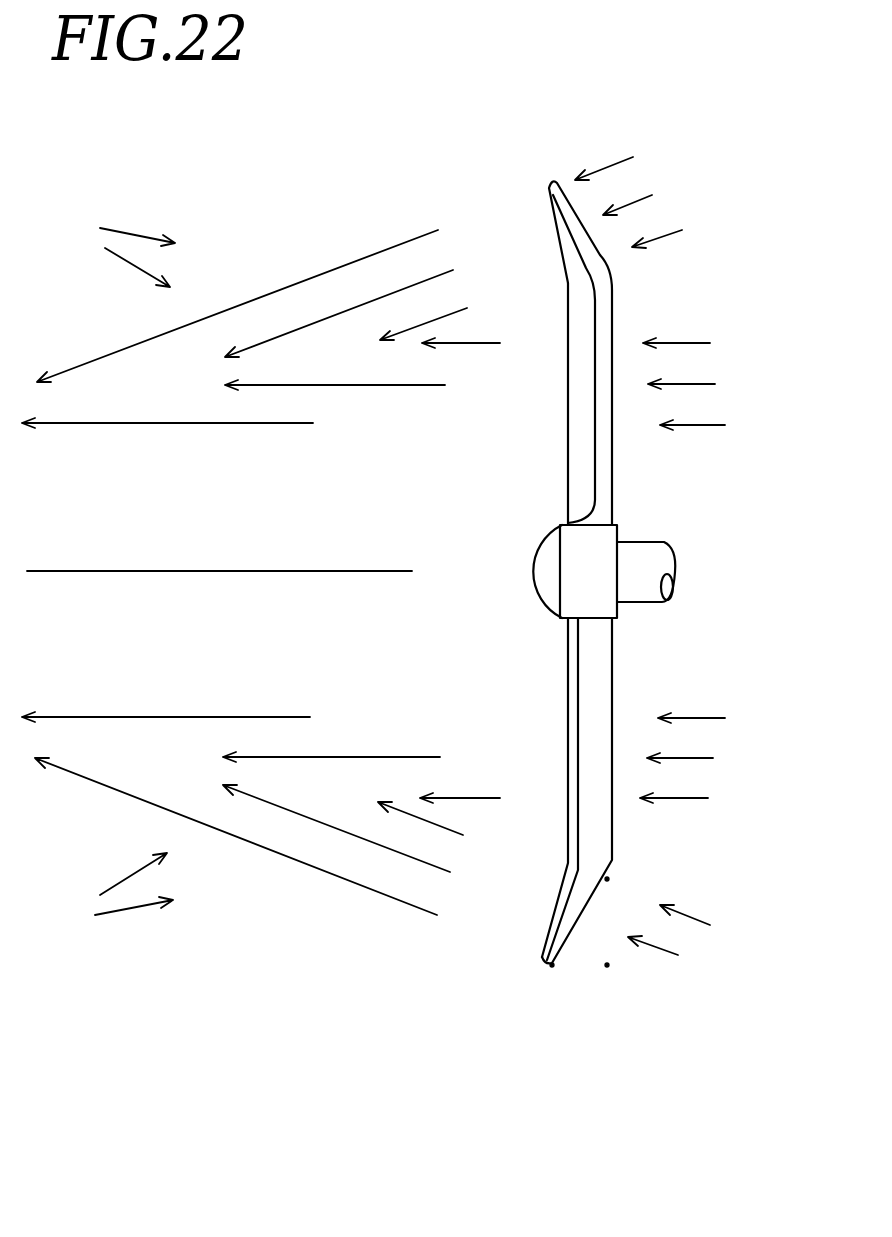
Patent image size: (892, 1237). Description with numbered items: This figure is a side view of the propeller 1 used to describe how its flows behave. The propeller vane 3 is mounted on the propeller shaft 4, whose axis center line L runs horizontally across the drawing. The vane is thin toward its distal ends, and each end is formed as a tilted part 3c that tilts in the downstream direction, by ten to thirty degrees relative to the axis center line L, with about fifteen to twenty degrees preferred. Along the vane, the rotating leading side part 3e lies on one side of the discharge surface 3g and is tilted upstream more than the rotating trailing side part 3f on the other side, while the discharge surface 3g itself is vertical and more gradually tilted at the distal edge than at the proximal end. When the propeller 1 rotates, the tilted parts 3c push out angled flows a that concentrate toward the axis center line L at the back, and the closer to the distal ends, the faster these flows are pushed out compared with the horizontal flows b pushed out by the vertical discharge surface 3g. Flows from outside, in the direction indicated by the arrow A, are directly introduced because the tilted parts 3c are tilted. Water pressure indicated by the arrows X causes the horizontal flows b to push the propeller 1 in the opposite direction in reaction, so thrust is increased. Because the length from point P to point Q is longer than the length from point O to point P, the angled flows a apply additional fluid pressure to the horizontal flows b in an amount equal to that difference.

The propeller 1 is at (696, 277).
The propeller vane 3 is at (629, 482).
The tilted part 3c is at (547, 210).
The rotating leading side part 3e is at (612, 697).
The rotating trailing side part 3f is at (565, 698).
The discharge surface 3g is at (578, 402).
The propeller shaft 4 is at (675, 590).
The arrow A is at (650, 559).
The arrows X is at (113, 570).
The angled flows a is at (261, 581).
The horizontal flows b is at (271, 578).
The axis center line L is at (310, 571).
The point P is at (607, 879).
The point Q is at (552, 965).
The point O is at (607, 965).